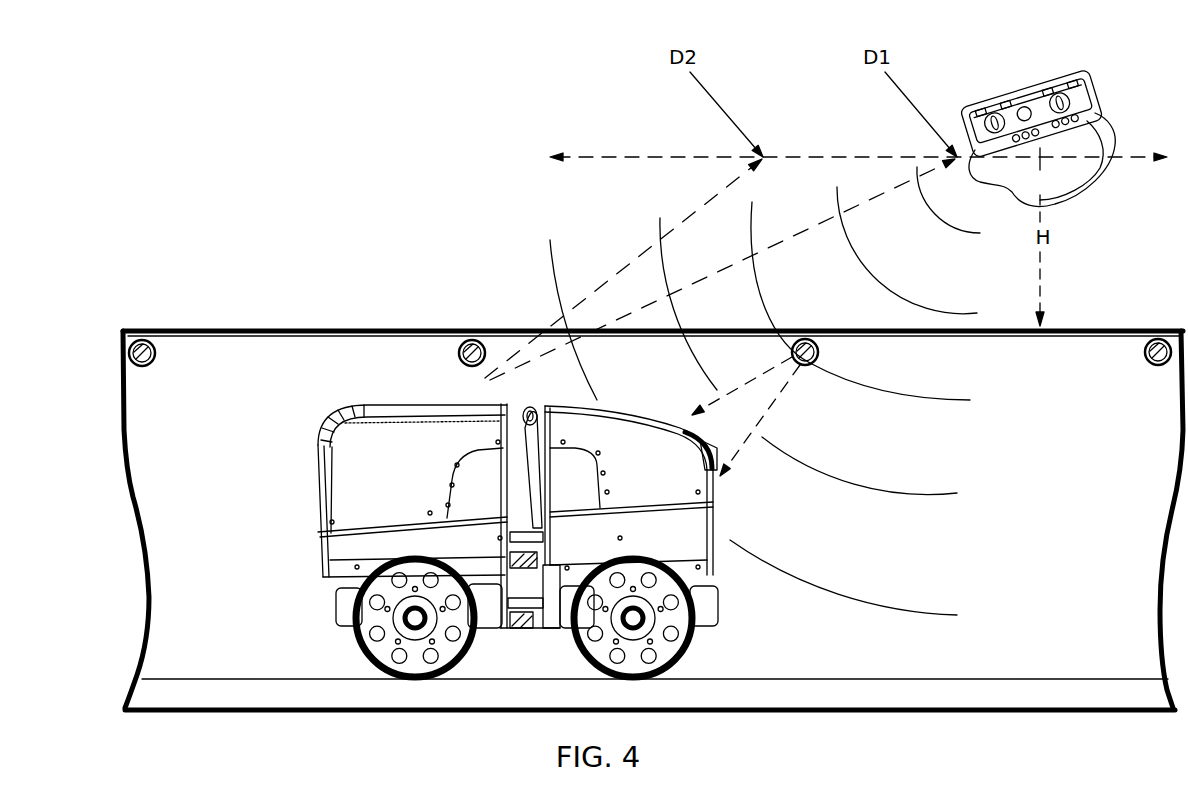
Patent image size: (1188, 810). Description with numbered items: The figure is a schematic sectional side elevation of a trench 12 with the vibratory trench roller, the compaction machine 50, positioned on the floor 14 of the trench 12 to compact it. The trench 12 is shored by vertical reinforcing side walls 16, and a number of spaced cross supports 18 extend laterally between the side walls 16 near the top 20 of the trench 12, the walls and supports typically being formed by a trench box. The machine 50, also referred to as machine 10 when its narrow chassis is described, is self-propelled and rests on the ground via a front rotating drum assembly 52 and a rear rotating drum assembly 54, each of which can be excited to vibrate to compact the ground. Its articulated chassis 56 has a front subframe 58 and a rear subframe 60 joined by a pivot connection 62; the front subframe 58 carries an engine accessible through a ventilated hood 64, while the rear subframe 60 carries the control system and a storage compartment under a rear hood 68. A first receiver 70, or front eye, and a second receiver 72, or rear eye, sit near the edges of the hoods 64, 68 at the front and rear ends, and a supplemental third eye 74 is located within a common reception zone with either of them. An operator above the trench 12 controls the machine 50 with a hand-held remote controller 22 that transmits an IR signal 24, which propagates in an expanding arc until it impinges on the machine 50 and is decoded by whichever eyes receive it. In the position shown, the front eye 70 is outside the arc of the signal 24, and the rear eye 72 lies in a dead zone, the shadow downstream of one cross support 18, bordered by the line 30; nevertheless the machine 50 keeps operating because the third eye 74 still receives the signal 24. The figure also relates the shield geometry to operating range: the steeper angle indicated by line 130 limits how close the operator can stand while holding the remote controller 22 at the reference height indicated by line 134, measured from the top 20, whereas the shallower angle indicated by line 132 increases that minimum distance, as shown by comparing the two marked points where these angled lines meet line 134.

The machine 10 is at (500, 512).
The trench 12 is at (238, 350).
The floor 14 is at (182, 679).
The side walls 16 is at (160, 457).
The cross supports 18 is at (138, 330).
The top 20 is at (333, 328).
The remote controller 22 is at (963, 112).
The IR signal 24 is at (962, 233).
The line 30 is at (798, 377).
The compaction machine 50 is at (500, 487).
The front rotating drum assembly 52 is at (478, 641).
The rear rotating drum assembly 54 is at (700, 642).
The articulated chassis 56 is at (720, 510).
The front subframe 58 is at (320, 545).
The rear subframe 60 is at (712, 540).
The pivot connection 62 is at (535, 534).
The ventilated hood 64 is at (340, 505).
The rear hood 68 is at (567, 401).
The first receiver 70 is at (323, 410).
The second receiver 72 is at (722, 442).
The third eye 74 is at (460, 395).
The line 130 is at (604, 282).
The line 132 is at (798, 237).
The line 134 is at (627, 157).